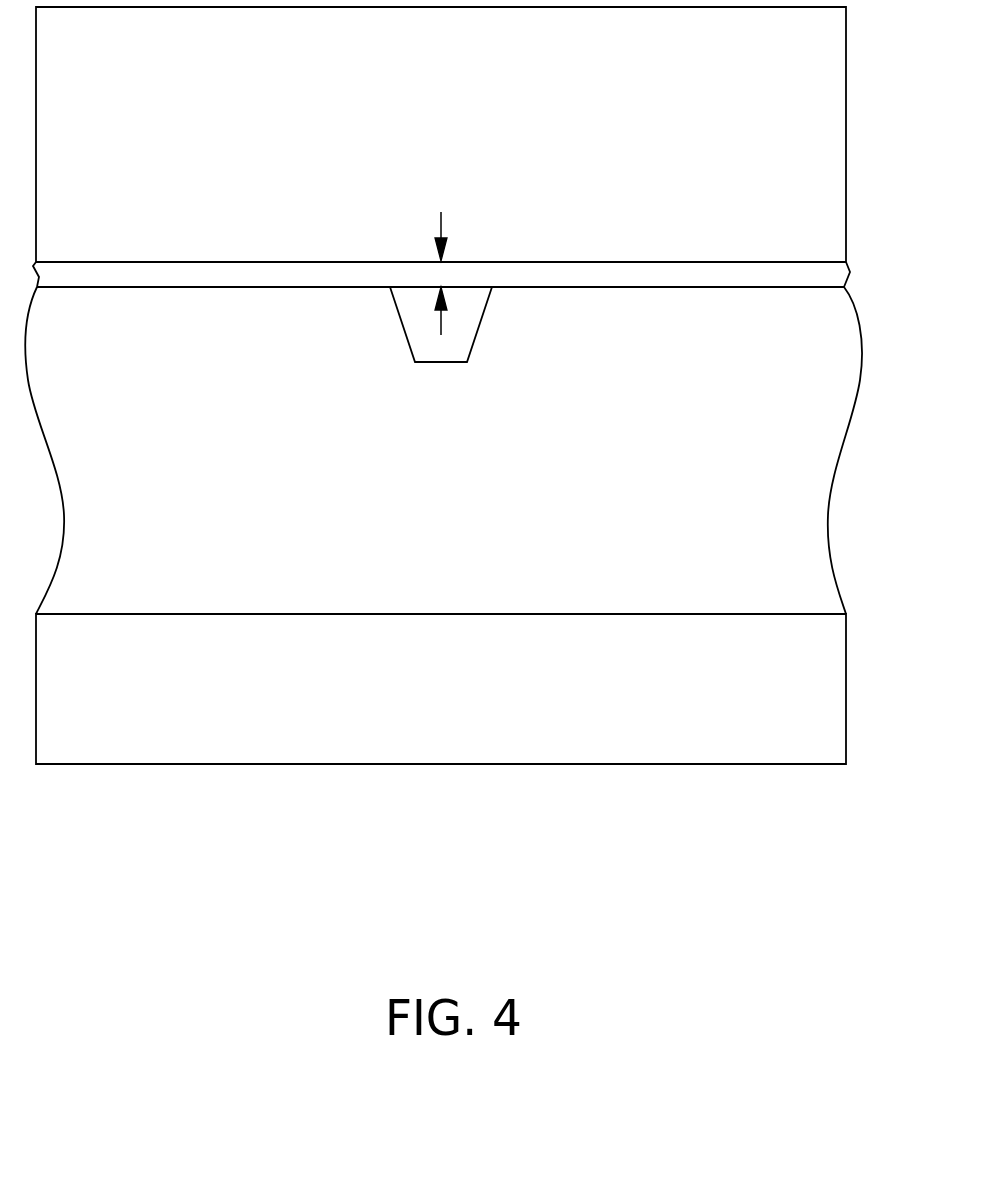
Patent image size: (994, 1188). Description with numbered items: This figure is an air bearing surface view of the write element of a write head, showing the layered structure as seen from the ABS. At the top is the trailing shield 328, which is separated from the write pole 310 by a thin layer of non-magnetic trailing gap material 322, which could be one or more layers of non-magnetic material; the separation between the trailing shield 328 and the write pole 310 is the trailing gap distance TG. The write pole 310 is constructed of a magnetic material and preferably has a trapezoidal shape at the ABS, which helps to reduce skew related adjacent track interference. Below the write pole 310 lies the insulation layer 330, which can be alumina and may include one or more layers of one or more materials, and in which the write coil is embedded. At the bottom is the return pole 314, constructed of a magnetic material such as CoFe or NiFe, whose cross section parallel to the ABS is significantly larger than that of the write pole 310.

The trailing shield 328 is at (500, 127).
The trailing gap material 322 is at (822, 275).
The insulation layer 330 is at (517, 507).
The return pole 314 is at (525, 692).
The write pole 310 is at (468, 323).
The trailing gap distance TG is at (441, 215).